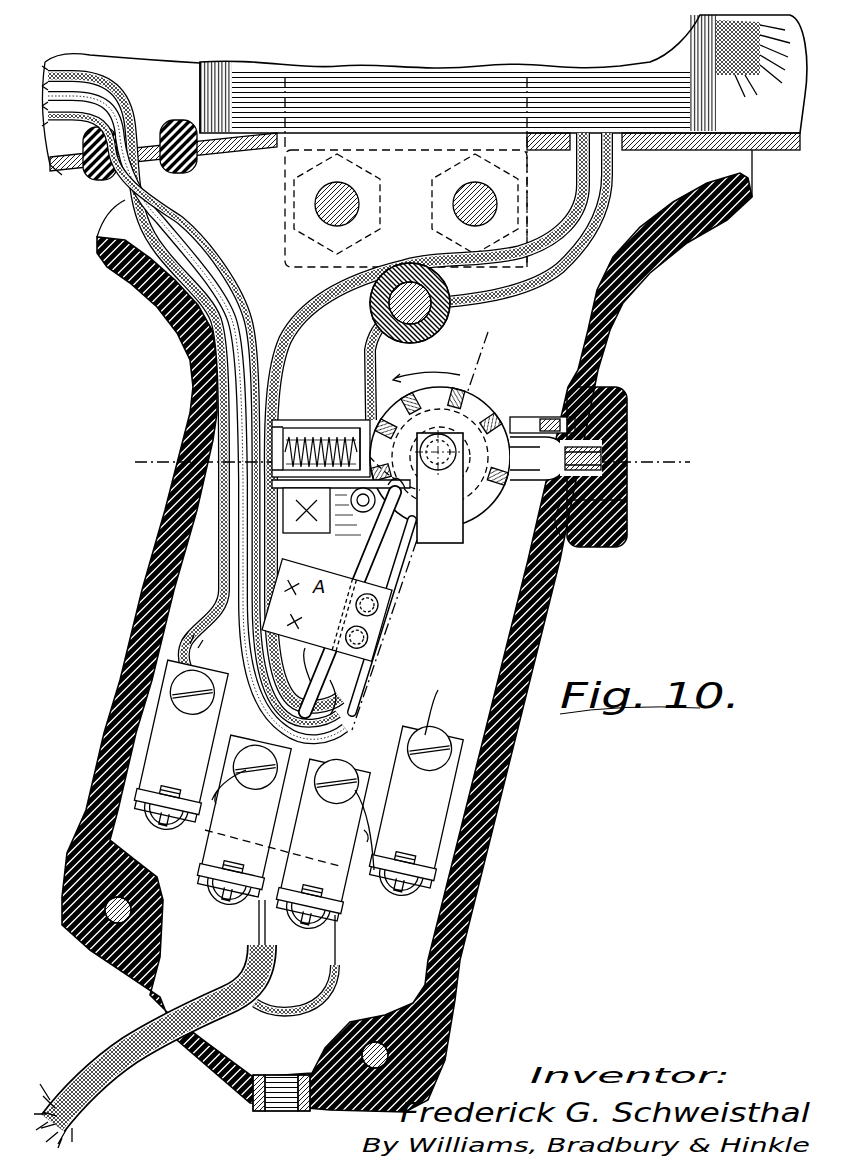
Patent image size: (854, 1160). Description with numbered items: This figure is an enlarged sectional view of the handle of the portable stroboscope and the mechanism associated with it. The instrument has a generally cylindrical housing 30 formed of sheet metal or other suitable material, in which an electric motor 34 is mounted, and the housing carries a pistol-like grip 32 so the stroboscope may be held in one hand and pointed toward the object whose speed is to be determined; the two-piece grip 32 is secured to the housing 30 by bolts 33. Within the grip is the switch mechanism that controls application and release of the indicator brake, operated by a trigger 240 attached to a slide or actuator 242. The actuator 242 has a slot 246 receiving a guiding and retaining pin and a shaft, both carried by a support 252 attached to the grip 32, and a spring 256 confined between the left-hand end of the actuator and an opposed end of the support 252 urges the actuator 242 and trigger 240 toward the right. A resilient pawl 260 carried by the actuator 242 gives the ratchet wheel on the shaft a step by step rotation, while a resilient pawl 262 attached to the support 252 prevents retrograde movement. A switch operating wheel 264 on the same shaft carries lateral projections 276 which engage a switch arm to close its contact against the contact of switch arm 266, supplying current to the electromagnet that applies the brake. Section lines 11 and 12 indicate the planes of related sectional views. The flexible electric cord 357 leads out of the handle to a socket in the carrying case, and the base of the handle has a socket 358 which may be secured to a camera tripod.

The section line 11- 11 is at (463, 350).
The section line 12- 12 is at (143, 484).
The housing 30 is at (765, 150).
The pistol-like grip 32 is at (505, 781).
The bolts 33 is at (315, 204).
The electric motor 34 is at (375, 92).
The trigger 240 is at (623, 410).
The actuator 242 is at (596, 516).
The slot 246 is at (602, 462).
The support 252 is at (456, 548).
The spring 256 is at (323, 440).
The resilient pawl 260 is at (527, 417).
The resilient pawl 262 is at (340, 508).
The switch operating wheel 264 is at (405, 392).
The switch arm 266 is at (386, 575).
The lateral projections 276 is at (465, 385).
The flexible electric cord 357 is at (112, 1112).
The socket 358 is at (270, 1110).